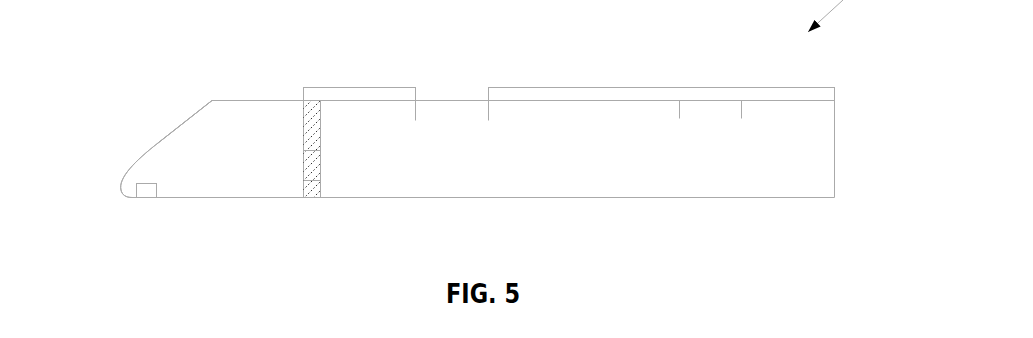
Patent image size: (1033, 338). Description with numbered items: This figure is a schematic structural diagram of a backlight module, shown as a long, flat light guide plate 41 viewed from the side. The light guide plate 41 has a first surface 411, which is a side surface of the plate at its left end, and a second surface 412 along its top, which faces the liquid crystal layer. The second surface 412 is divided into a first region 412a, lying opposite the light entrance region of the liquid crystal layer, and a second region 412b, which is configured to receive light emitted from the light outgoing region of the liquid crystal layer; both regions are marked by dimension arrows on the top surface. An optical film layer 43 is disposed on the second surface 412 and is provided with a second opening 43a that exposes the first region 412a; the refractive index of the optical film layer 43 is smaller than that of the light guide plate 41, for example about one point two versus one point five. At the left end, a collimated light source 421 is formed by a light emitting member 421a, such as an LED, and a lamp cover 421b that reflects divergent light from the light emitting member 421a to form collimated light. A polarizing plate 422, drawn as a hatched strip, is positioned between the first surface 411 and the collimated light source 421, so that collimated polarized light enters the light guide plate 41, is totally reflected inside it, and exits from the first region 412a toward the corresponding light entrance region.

The light guide plate 41 is at (834, 143).
The first surface 411 is at (322, 163).
The second surface 412 is at (358, 100).
The first region 412a is at (512, 128).
The second region 412b is at (768, 128).
The optical film layer 43 is at (834, 90).
The second opening 43a is at (450, 93).
The collimated light source 421 is at (158, 50).
The light emitting member 421a is at (148, 184).
The lamp cover 421b is at (193, 112).
The polarizing plate 422 is at (310, 198).